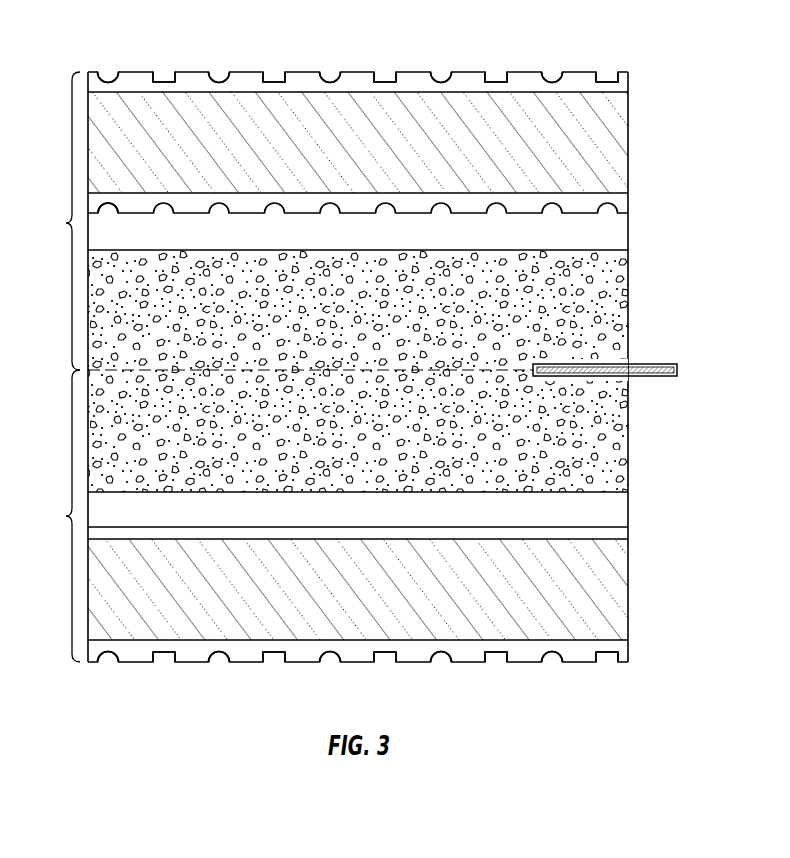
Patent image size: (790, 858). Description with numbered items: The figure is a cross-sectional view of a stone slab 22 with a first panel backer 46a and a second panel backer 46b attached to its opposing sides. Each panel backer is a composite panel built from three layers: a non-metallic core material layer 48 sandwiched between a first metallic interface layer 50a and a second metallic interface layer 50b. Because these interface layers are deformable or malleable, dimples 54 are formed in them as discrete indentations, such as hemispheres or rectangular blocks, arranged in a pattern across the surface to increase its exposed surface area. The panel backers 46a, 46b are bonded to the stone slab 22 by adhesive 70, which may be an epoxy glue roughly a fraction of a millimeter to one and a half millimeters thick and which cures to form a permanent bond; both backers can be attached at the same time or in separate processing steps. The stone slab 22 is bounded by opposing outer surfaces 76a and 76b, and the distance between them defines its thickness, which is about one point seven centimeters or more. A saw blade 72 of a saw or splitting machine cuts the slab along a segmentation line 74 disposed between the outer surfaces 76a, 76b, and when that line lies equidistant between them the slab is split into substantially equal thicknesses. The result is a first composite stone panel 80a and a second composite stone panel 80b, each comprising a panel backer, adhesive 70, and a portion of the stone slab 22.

The stone slab 22 is at (368, 416).
The first panel backer 46a is at (657, 125).
The second panel backer 46b is at (657, 606).
The non-metallic core material layer 48 is at (368, 151).
The first metallic interface layer 50a is at (577, 76).
The second metallic interface layer 50b is at (620, 203).
The dimples 54 is at (275, 79).
The adhesive 70 is at (368, 240).
The saw blade 72 is at (643, 364).
The segmentation line 74 is at (363, 368).
The first outer surface of stone slab 76a is at (380, 251).
The second outer surface of stone slab 76b is at (383, 491).
The first composite stone panel 80a is at (58, 221).
The second composite stone panel 80b is at (58, 516).